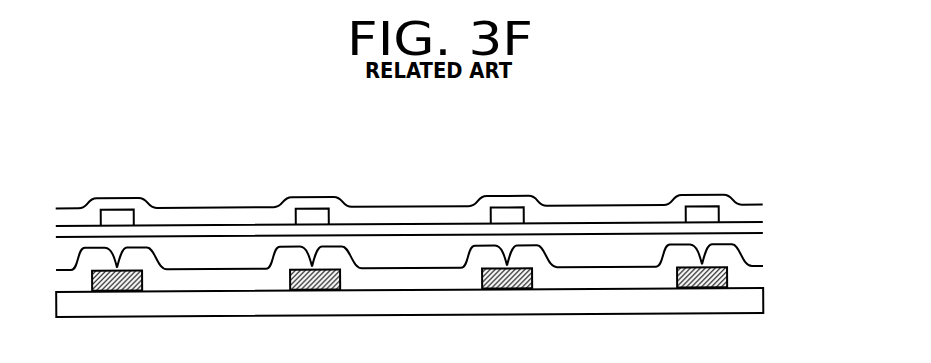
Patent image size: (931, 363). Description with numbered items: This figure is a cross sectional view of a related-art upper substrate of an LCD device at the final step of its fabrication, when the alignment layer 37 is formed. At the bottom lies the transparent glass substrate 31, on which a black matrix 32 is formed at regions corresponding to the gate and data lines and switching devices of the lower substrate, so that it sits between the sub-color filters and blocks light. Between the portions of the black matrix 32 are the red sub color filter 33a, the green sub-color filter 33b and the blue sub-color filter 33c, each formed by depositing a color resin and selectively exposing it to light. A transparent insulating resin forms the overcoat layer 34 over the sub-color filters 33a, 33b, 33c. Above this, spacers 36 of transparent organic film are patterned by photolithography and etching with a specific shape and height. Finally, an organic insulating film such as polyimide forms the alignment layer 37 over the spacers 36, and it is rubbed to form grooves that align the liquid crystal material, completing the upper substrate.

The transparent glass substrate 31 is at (757, 300).
The black matrix 32 is at (728, 270).
The red sub color filter 33a is at (197, 274).
The green sub-color filter 33b is at (393, 274).
The blue sub-color filter 33c is at (587, 274).
The overcoat layer 34 is at (644, 243).
The spacers 36 is at (712, 215).
The alignment layer 37 is at (454, 213).